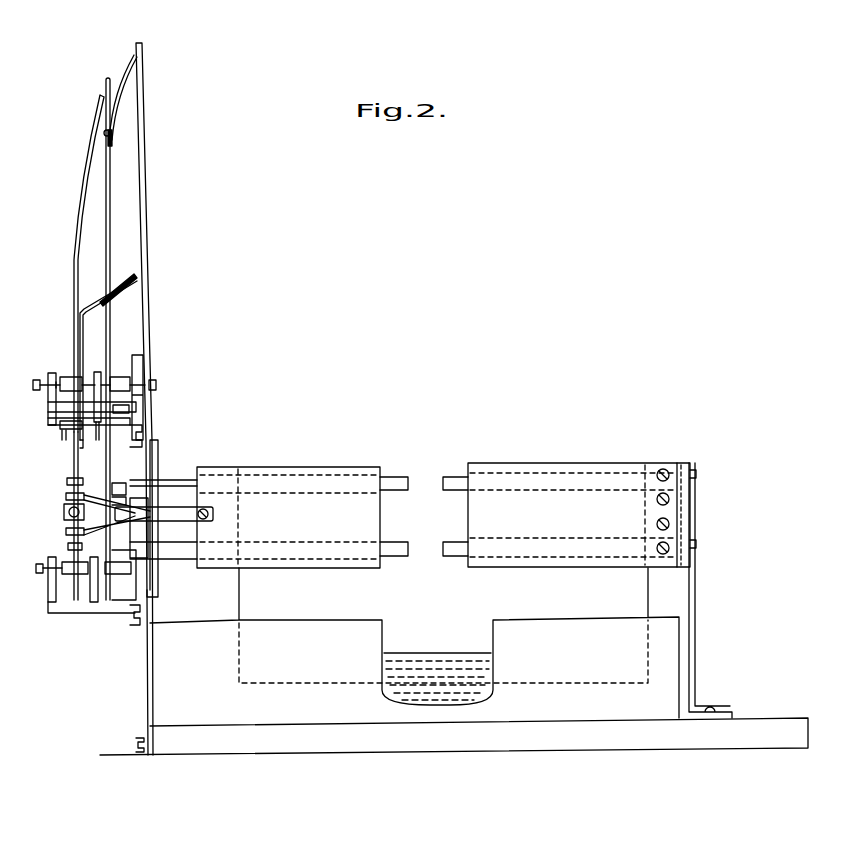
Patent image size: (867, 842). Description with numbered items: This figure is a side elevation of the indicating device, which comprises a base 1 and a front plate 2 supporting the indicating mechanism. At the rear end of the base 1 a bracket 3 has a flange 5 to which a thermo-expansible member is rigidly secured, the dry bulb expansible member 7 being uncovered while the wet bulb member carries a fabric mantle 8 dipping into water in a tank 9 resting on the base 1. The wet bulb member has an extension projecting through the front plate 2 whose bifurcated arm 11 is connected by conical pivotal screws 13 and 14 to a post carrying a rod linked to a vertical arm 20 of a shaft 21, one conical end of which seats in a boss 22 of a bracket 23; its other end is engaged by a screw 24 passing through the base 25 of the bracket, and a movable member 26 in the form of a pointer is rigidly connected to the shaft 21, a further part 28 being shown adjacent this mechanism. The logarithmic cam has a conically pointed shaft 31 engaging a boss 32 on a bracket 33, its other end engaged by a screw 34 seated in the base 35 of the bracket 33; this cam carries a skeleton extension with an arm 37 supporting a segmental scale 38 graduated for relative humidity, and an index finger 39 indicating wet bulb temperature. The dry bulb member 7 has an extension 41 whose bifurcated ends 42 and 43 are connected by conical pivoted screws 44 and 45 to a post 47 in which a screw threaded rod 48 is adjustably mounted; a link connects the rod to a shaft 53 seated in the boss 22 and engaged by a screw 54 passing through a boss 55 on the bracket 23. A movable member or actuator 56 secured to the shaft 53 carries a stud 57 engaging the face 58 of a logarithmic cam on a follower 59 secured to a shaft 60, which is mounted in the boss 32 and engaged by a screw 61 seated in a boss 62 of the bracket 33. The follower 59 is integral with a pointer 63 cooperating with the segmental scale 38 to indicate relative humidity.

The base 1 is at (400, 752).
The front plate 2 is at (147, 668).
The bracket 3 is at (695, 602).
The flange 5 is at (680, 520).
The dry bulb thermo-expansible member 7 is at (343, 482).
The mantle 8 is at (640, 598).
The tank 9 is at (665, 668).
The arm of bifurcation 11 is at (119, 502).
The conical pivotal screw 13 is at (115, 483).
The conical pivotal screw 14 is at (130, 535).
The vertical arm 20 is at (152, 510).
The shaft 21 is at (102, 605).
The boss 22 is at (92, 592).
The bracket 23 is at (120, 608).
The screw 24 is at (130, 568).
The base of bracket 25 is at (152, 597).
The movable member 26 is at (107, 465).
The stop 28 is at (122, 408).
The shaft 31 is at (118, 375).
The boss 32 is at (95, 378).
The bracket 33 is at (97, 420).
The screw 34 is at (153, 378).
The base of bracket 35 is at (137, 392).
The arm 37 is at (112, 245).
The segmental scale 38 is at (108, 132).
The index finger 39 is at (120, 80).
The extension 41 is at (197, 520).
The bifurcated end 42 is at (88, 503).
The bifurcated end 43 is at (95, 530).
The conical pivoted screw 44 is at (67, 483).
The conical pivoted screw 45 is at (66, 540).
The post 47 is at (64, 515).
The screw threaded rod 48 is at (66, 506).
The shaft 53 is at (67, 603).
The screw 54 is at (60, 562).
The boss 55 is at (55, 592).
The movable member or actuator 56 is at (80, 440).
The stud 57 is at (63, 422).
The cam face 58 is at (77, 407).
The follower 59 is at (72, 340).
The shaft 60 is at (65, 378).
The screw 61 is at (34, 378).
The boss 62 is at (48, 405).
The pointer 63 is at (72, 230).